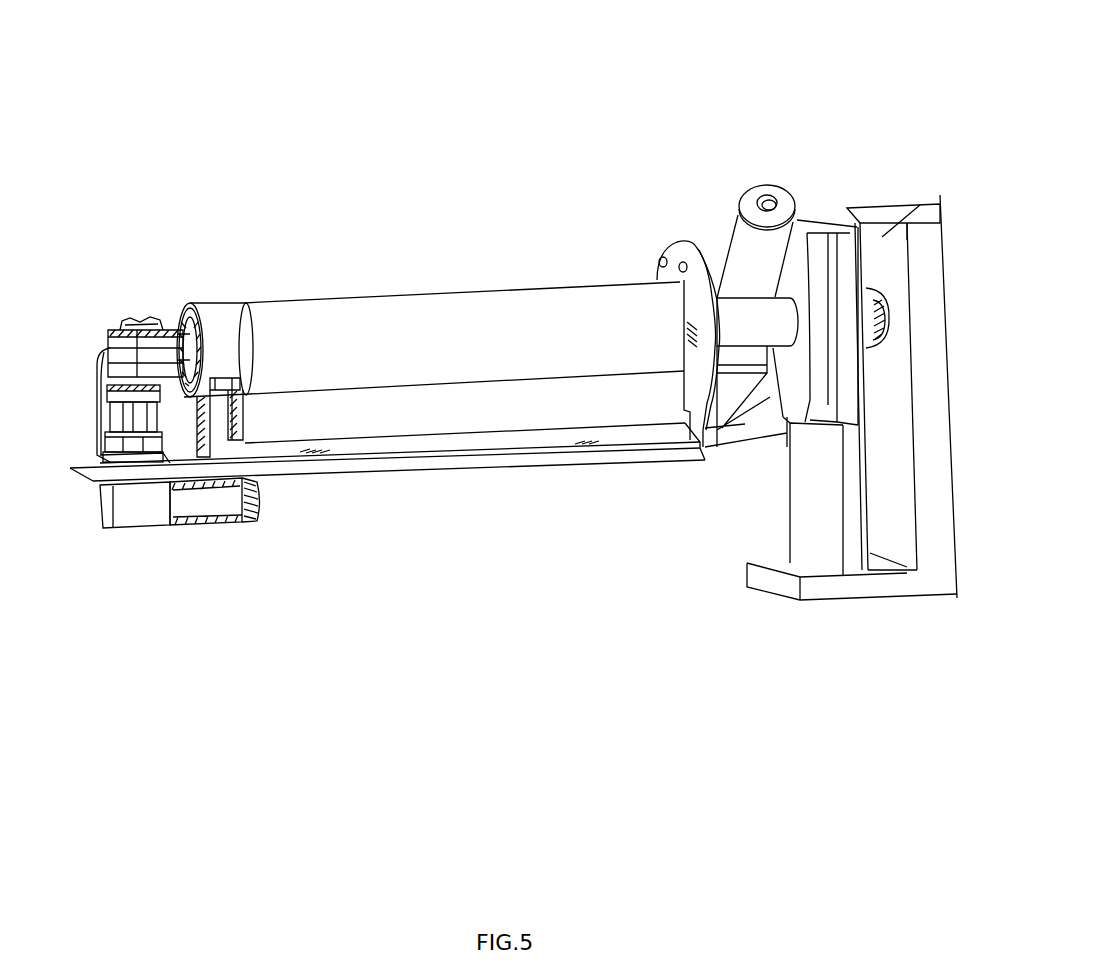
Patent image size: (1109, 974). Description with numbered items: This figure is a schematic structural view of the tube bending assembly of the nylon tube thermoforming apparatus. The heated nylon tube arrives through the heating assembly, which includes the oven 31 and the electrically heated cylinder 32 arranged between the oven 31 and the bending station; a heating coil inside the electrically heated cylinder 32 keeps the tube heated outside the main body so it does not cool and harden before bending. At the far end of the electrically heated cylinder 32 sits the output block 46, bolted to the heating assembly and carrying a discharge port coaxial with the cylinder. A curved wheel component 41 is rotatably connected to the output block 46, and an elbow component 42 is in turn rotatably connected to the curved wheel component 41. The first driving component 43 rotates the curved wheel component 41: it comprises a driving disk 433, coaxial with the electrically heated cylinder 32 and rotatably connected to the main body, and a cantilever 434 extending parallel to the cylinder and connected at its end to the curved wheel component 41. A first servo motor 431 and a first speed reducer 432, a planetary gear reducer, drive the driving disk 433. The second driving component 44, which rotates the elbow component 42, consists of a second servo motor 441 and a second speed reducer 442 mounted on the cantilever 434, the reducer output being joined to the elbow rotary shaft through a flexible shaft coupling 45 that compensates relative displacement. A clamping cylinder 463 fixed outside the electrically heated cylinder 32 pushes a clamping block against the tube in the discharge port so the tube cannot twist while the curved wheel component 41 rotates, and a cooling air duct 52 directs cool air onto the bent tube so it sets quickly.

The oven 31 is at (910, 213).
The electrically heated cylinder 32 is at (377, 308).
The curved wheel component 41 is at (169, 312).
The elbow component 42 is at (134, 300).
The first driving component 43 is at (443, 480).
The second driving component 44 is at (163, 533).
The shaft coupling 45 is at (100, 455).
The output block 46 is at (212, 312).
The cooling air duct 52 is at (99, 372).
The first servo motor 431 is at (745, 425).
The first speed reducer 432 is at (766, 188).
The driving disk 433 is at (673, 247).
The cantilever 434 is at (598, 462).
The second servo motor 441 is at (225, 508).
The second speed reducer 442 is at (142, 508).
The clamping cylinder 463 is at (210, 428).